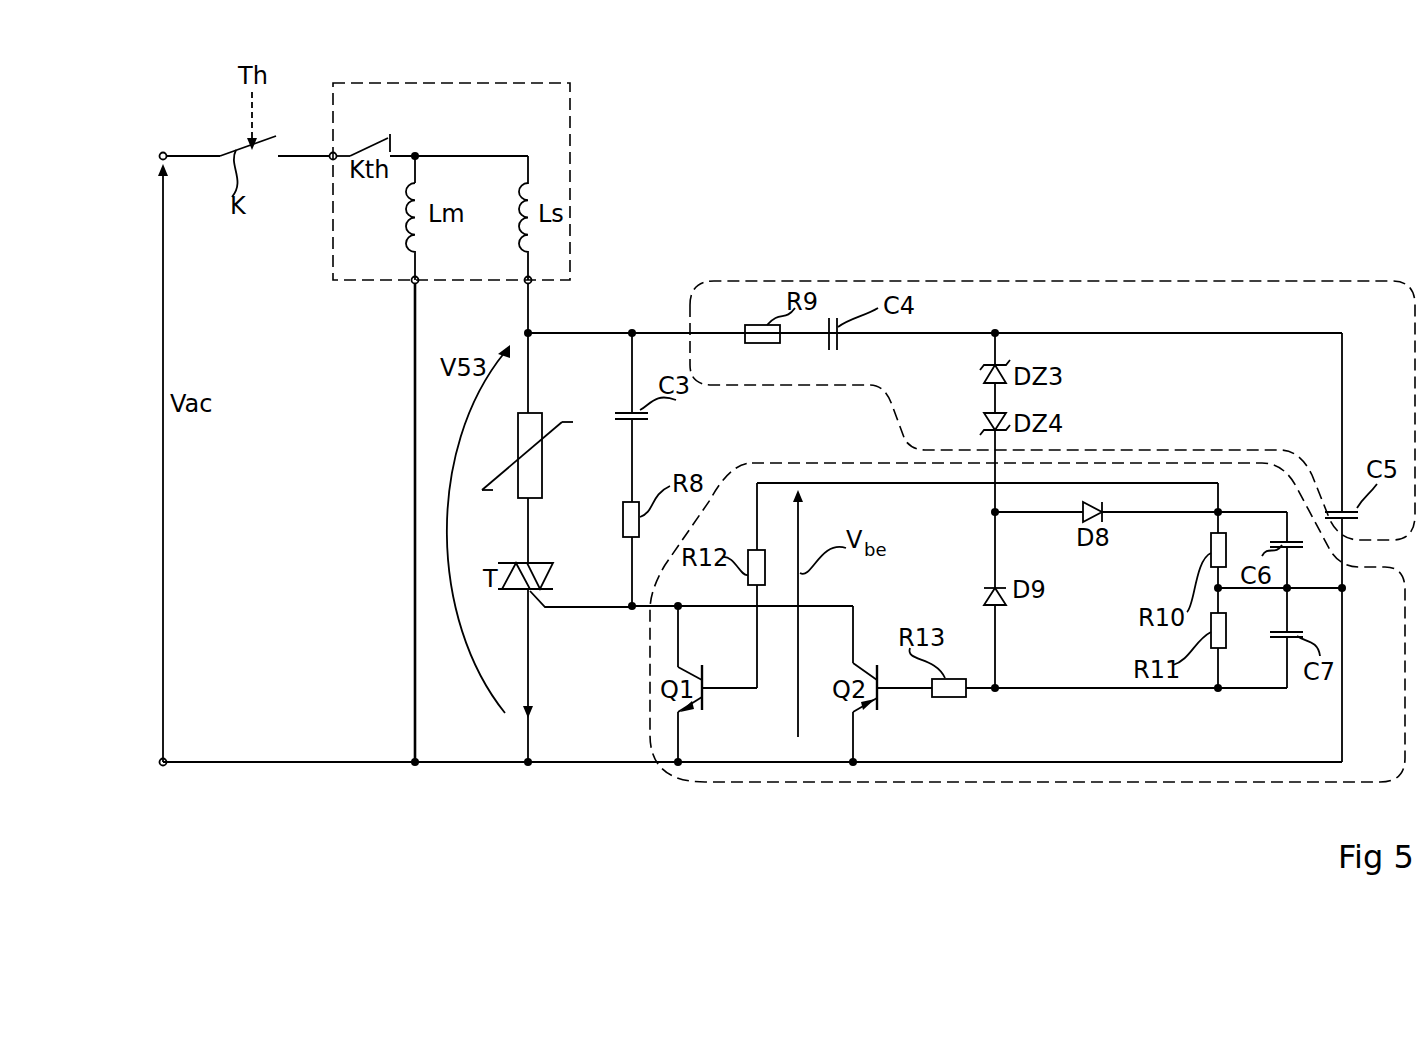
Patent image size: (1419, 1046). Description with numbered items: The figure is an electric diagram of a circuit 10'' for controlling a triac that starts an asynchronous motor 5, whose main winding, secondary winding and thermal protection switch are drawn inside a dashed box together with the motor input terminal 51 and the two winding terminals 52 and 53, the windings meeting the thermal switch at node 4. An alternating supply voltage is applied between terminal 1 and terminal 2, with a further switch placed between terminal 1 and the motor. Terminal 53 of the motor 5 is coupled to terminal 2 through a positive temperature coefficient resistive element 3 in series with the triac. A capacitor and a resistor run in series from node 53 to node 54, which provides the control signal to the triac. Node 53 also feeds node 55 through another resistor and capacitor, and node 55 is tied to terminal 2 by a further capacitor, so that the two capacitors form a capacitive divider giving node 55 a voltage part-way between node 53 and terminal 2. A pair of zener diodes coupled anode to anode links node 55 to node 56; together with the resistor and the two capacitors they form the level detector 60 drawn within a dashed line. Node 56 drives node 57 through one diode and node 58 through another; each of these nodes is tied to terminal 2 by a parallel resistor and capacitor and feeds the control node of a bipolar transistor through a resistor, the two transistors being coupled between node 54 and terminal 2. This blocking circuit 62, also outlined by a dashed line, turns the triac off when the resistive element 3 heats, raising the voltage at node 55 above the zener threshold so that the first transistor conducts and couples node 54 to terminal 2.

The terminal 1 is at (163, 150).
The terminal 2 is at (158, 762).
The resistive element having a positive temperature coefficient 3 is at (541, 458).
The motor node 4 is at (417, 152).
The asynchronous motor 5 is at (571, 154).
The circuit 10'' is at (1283, 209).
The motor input terminal 51 is at (333, 152).
The main winding terminal 52 is at (412, 284).
The terminal 53 is at (533, 284).
The node 54 is at (632, 612).
The node 55 is at (1000, 330).
The node 56 is at (992, 514).
The node 57 is at (1212, 514).
The node 58 is at (998, 692).
The level detector 60 is at (887, 280).
The blocking circuit 62 is at (1000, 784).